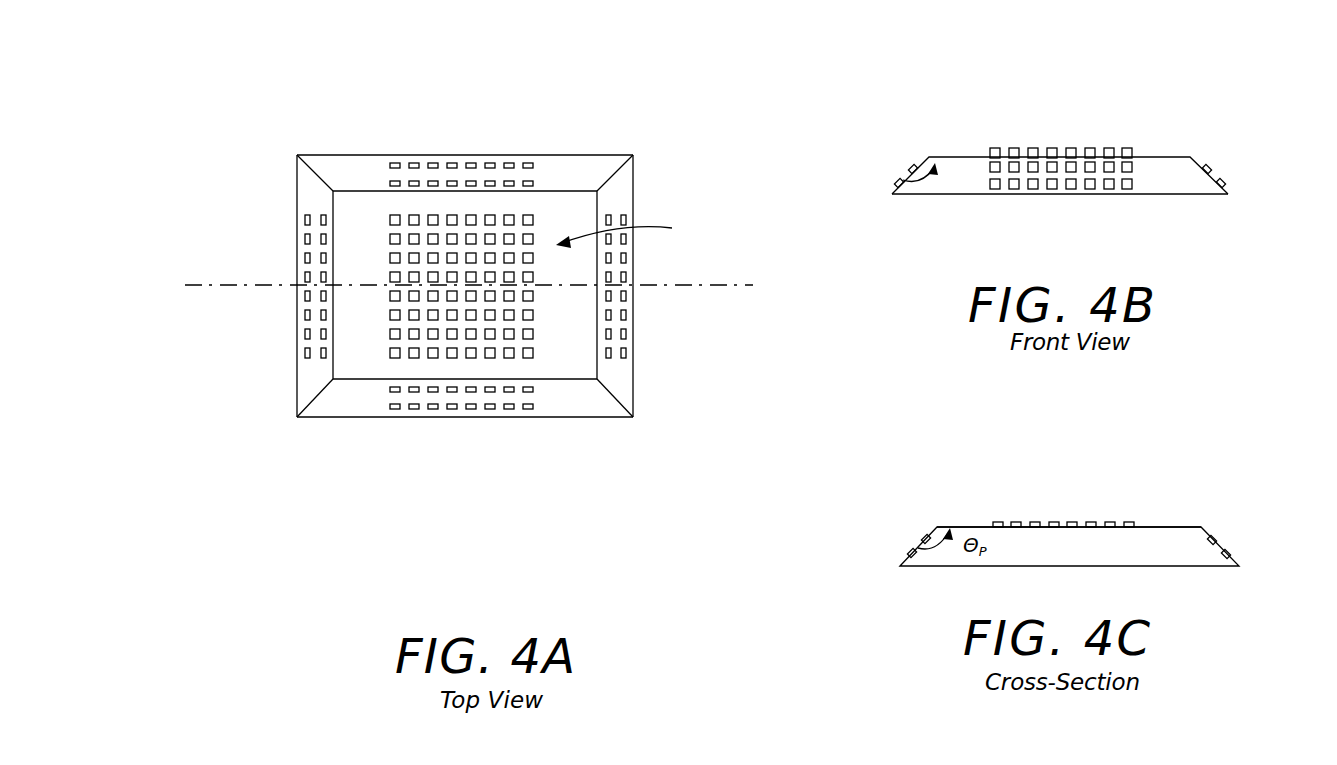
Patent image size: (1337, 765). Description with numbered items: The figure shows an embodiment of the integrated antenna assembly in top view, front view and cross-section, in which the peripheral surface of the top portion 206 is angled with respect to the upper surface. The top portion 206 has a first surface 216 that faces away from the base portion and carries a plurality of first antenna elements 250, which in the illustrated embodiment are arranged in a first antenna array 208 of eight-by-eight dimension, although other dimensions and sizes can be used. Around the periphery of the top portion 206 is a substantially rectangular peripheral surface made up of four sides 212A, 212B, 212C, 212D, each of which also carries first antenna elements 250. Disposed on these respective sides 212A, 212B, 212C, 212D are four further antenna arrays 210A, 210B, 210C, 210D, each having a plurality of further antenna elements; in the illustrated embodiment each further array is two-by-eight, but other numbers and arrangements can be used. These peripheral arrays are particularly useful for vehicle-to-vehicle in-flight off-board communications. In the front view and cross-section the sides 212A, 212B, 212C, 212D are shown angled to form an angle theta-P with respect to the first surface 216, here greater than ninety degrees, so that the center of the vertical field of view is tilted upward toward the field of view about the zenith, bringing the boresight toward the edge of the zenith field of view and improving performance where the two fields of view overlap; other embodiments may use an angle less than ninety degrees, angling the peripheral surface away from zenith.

In FIG. 4A, the top portion 206 is at (422, 294).
In FIG. 4B, the top portion 206 is at (1050, 145).
In FIG. 4A, the first antenna array 208 is at (578, 327).
In FIG. 4A, the further antenna array 210A is at (270, 325).
In FIG. 4A, the further antenna array 210B is at (458, 431).
In FIG. 4A, the further antenna array 210C is at (654, 342).
In FIG. 4A, the further antenna array 210D is at (463, 95).
In FIG. 4A, the side of the peripheral surface 212A is at (315, 197).
In FIG. 4A, the side of the peripheral surface 212B is at (357, 403).
In FIG. 4B, the side of the peripheral surface 212B is at (977, 200).
In FIG. 4A, the side of the peripheral surface 212C is at (615, 190).
In FIG. 4A, the side of the peripheral surface 212D is at (573, 163).
In FIG. 4A, the first surface 216 is at (553, 342).
In FIG. 4B, the first surface 216 is at (1162, 157).
In FIG. 4C, the first surface 216 is at (1163, 527).
In FIG. 4A, the first antenna elements 250 is at (392, 163).
In FIG. 4B, the first antenna elements 250 is at (917, 163).
In FIG. 4C, the first antenna elements 250 is at (1230, 545).